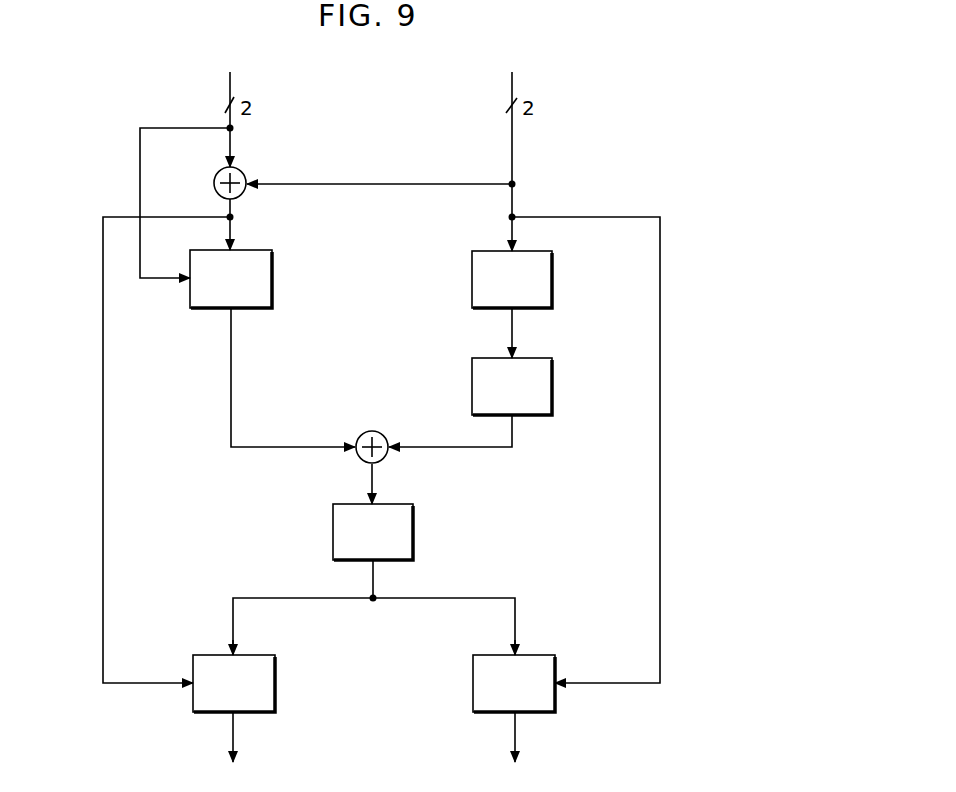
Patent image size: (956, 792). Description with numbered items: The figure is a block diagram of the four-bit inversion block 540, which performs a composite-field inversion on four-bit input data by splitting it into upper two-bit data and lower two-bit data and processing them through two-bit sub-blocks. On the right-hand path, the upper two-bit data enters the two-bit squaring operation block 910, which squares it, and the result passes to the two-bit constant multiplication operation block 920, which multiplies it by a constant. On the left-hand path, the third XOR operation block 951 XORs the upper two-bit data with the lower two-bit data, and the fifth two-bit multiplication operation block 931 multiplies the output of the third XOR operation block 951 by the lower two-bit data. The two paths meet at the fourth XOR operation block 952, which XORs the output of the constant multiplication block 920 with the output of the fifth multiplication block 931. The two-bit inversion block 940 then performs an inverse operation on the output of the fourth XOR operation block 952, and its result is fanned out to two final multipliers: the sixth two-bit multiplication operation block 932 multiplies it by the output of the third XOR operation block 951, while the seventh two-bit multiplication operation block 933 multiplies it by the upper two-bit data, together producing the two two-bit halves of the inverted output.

The 4-bit inversion block 540 is at (644, 126).
The third XOR operation block 951 is at (243, 170).
The fifth 2-bit multiplication operation block 931 is at (273, 279).
The 2-bit squaring operation block 910 is at (553, 279).
The 2-bit constant multiplication operation block 920 is at (553, 386).
The fourth XOR operation block 952 is at (372, 431).
The 2-bit inversion block 940 is at (414, 530).
The sixth 2-bit multiplication operation block 932 is at (253, 652).
The seventh 2-bit multiplication operation block 933 is at (533, 652).